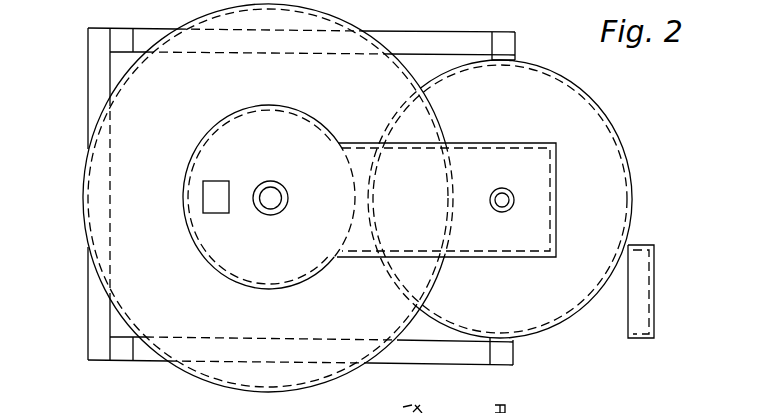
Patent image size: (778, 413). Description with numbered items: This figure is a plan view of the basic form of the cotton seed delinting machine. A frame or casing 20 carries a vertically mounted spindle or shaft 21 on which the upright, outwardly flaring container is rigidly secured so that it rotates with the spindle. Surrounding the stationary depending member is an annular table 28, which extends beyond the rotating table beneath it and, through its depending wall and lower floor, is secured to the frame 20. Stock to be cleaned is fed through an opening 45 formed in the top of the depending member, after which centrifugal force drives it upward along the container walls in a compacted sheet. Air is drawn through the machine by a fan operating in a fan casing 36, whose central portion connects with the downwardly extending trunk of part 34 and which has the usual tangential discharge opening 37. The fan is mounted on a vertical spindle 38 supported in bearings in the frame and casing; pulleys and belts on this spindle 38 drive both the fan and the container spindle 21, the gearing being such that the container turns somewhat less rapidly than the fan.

The frame or casing 20 is at (97, 321).
The spindle or shaft 21 is at (265, 190).
The annular table 28 is at (215, 145).
The slide plate 34 is at (481, 143).
The fan casing 36 is at (598, 148).
The tangential discharge opening 37 is at (633, 325).
The vertical spindle 38 is at (504, 197).
The opening 45 is at (214, 203).